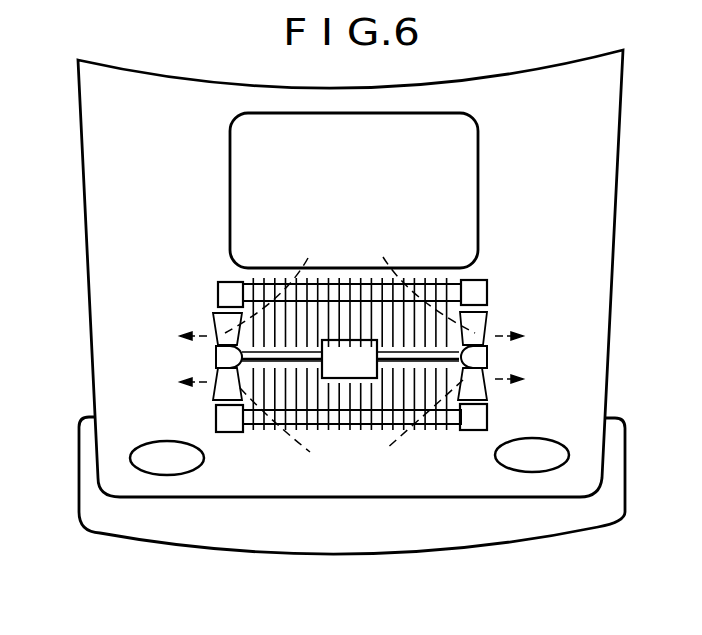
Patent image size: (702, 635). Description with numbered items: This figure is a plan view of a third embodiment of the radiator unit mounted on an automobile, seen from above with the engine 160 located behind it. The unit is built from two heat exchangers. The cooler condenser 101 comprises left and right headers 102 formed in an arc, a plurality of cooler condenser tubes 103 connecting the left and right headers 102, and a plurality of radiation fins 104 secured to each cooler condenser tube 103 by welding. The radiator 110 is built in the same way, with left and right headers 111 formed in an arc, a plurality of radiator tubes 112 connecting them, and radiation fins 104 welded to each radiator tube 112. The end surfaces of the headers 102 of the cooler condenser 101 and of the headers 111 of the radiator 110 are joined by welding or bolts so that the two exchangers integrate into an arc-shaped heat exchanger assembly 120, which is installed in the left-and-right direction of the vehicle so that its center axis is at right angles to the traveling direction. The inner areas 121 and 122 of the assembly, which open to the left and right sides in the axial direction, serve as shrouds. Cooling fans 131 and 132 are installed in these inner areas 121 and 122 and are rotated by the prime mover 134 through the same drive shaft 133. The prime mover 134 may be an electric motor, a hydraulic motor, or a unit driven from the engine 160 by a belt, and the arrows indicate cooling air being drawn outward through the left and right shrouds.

The engine 160 is at (453, 145).
The cooler condenser 101 is at (496, 292).
The left and right headers 102 is at (218, 290).
The cooler condenser tubes 103 is at (432, 290).
The radiation fins 104 is at (263, 285).
The radiator 110 is at (495, 417).
The left and right headers 111 is at (227, 420).
The radiator tubes 112 is at (420, 417).
The heat exchanger assembly 120 is at (318, 478).
The inner area 121 is at (217, 318).
The inner area 122 is at (478, 318).
The cooling fan 131 is at (225, 390).
The cooling fan 132 is at (480, 388).
The drive shaft 133 is at (268, 357).
The prime mover 134 is at (345, 365).